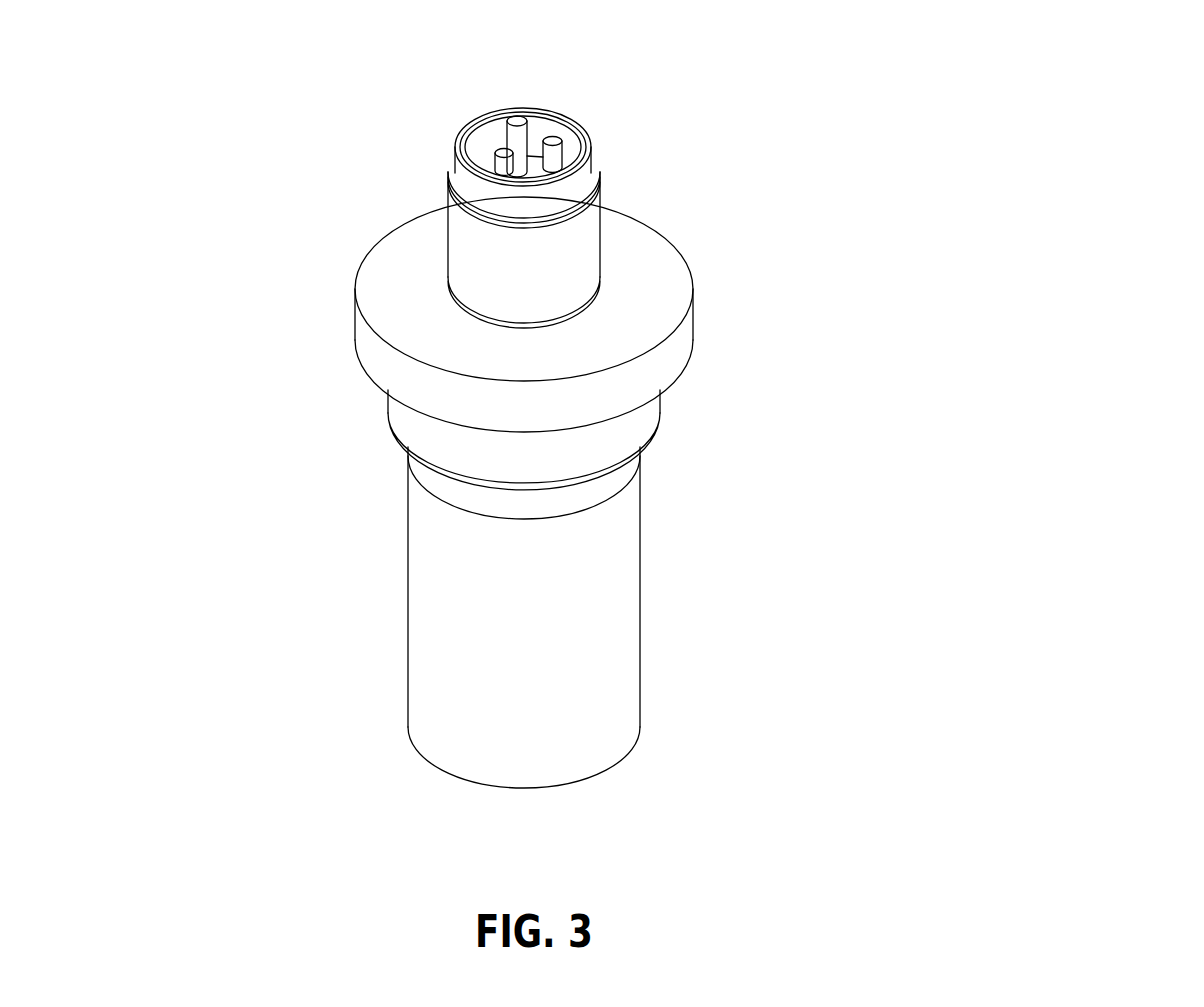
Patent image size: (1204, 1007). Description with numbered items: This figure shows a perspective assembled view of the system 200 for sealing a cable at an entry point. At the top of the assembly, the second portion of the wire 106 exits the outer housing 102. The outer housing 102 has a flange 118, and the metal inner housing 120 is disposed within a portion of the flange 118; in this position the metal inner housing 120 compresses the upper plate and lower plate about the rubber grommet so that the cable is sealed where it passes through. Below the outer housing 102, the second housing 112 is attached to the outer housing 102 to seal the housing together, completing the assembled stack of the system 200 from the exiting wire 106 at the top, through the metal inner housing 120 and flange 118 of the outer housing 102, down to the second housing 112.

The system 200 is at (1086, 78).
The wire 106 is at (503, 150).
The metal inner housing 120 is at (585, 165).
The flange 118 is at (595, 225).
The outer housing 102 is at (637, 417).
The second housing 112 is at (627, 615).